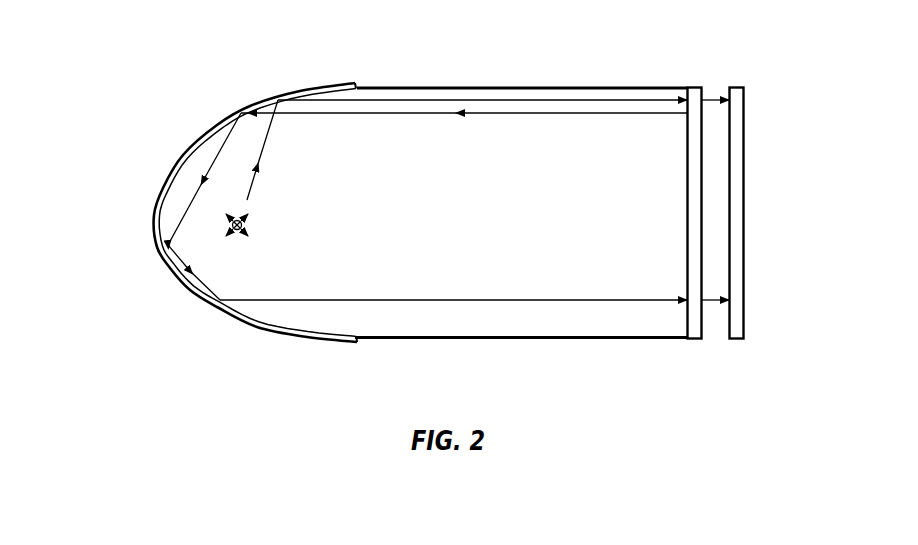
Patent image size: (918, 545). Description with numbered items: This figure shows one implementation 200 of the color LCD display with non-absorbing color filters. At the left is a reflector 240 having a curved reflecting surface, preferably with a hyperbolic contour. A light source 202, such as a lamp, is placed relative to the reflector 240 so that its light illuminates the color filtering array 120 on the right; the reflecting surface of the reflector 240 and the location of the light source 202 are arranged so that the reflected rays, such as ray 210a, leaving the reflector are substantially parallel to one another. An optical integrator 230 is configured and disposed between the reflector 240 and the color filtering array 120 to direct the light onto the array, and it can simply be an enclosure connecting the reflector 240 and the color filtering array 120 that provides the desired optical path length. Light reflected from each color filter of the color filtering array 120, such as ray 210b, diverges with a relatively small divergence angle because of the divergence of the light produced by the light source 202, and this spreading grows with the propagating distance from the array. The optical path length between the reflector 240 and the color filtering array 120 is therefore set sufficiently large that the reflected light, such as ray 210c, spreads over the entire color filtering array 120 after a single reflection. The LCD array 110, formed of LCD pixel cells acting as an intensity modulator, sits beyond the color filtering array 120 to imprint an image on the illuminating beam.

The implementation of the LCD display 200 is at (166, 54).
The reflector 240 is at (255, 230).
The optical integrator 230 is at (521, 182).
The color filtering array 120 is at (667, 182).
The LCD array 110 is at (775, 182).
The reflected ray 210a is at (467, 113).
The reflected light ray from color filter 210b is at (427, 206).
The spread reflected ray 210c is at (453, 269).
The light source 202 is at (285, 211).